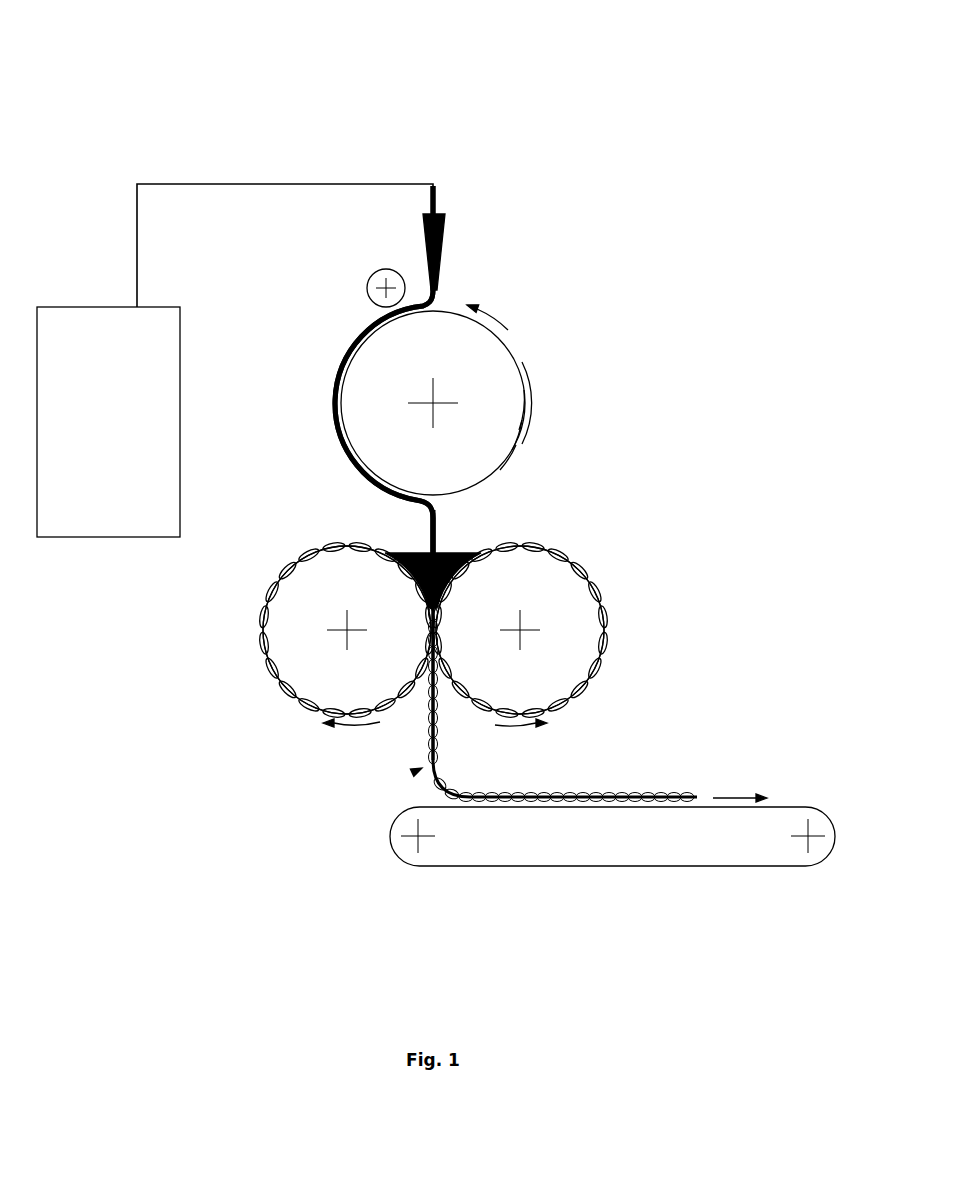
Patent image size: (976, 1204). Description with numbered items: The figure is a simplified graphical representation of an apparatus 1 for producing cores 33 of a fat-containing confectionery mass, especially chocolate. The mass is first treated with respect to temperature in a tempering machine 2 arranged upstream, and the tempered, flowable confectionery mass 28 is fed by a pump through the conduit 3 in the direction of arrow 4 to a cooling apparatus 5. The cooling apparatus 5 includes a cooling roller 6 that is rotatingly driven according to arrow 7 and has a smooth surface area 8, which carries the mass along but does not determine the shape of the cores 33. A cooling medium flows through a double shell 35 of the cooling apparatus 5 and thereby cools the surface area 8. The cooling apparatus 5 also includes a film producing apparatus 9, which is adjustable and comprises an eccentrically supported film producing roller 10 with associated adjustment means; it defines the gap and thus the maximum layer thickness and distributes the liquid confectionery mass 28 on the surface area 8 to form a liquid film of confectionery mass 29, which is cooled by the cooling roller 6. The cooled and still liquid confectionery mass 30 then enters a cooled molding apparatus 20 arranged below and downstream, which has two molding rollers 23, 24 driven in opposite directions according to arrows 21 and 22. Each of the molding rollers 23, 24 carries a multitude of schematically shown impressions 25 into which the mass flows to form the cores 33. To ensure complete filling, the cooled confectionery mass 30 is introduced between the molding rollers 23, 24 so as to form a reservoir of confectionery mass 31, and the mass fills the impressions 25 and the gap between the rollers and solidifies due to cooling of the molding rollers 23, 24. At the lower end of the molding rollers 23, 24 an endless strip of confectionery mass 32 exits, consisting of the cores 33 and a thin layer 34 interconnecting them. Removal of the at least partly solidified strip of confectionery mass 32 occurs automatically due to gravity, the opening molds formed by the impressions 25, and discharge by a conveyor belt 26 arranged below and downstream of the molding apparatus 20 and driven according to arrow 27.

The apparatus 1 is at (543, 307).
The tempering machine 2 is at (65, 320).
The conduit 3 is at (172, 184).
The arrow 4 is at (446, 229).
The cooling apparatus 5 is at (534, 380).
The cooling roller 6 is at (507, 417).
The arrow 7 is at (502, 318).
The surface area 8 is at (522, 437).
The film producing apparatus 9 is at (363, 160).
The film producing roller 10 is at (373, 274).
The molding apparatus 20 is at (285, 727).
The arrow 21 is at (377, 725).
The arrow 22 is at (522, 727).
The molding roller 23 is at (300, 678).
The molding roller 24 is at (552, 581).
The impressions 25 is at (598, 655).
The conveyor belt 26 is at (448, 876).
The arrow 27 is at (730, 797).
The confectionery mass 28 is at (419, 296).
The film of confectionery mass 29 is at (348, 343).
The cooled confectionery mass 30 is at (440, 527).
The reservoir of confectionery mass 31 is at (470, 557).
The strip of confectionery mass 32 is at (415, 771).
The cores 33 is at (435, 786).
The thin layer 34 is at (428, 722).
The double shell 35 is at (507, 462).